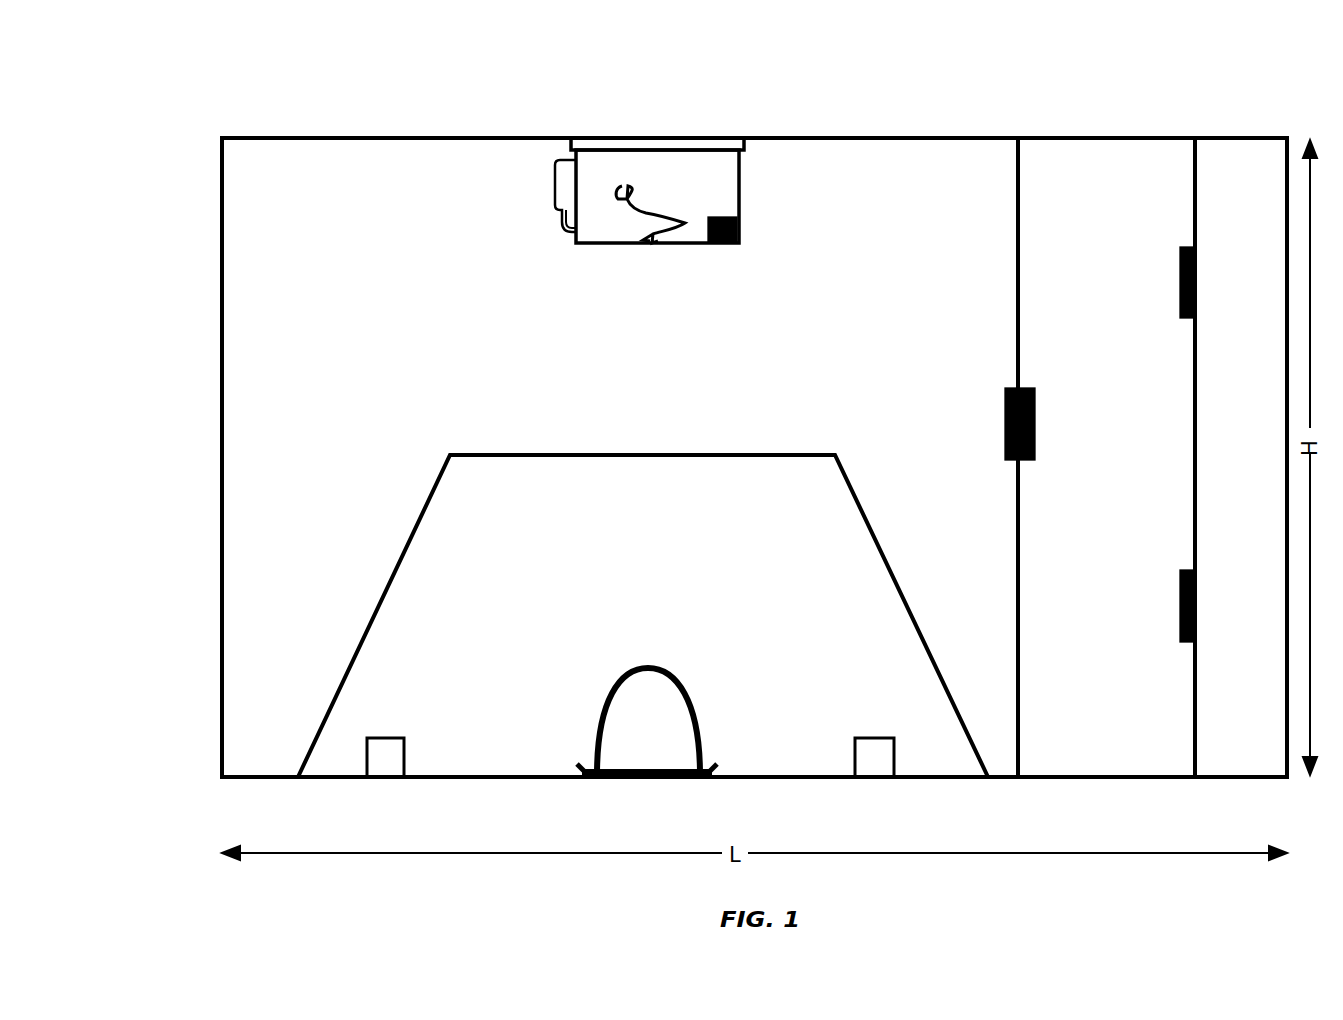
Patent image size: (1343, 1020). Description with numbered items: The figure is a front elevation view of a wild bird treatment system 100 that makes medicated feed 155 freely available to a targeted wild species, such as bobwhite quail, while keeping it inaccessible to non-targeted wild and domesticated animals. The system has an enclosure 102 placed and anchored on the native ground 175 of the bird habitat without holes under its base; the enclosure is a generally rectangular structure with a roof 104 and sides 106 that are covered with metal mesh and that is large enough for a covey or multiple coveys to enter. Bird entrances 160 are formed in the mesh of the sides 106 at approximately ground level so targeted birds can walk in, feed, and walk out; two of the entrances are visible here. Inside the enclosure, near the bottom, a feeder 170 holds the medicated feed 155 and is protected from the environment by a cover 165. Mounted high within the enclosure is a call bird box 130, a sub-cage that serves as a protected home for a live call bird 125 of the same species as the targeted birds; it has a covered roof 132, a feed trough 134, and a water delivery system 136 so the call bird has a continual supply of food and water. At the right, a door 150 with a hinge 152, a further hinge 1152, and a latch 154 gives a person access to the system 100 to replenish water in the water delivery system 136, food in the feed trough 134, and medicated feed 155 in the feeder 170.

The wild bird treatment system 100 is at (360, 86).
The enclosure 102 is at (222, 232).
The roof 104 is at (492, 138).
The sides 106 is at (225, 437).
The live call bird 125 is at (614, 220).
The call bird box 130 is at (658, 243).
The covered roof 132 is at (725, 138).
The feed trough 134 is at (739, 238).
The water delivery system 136 is at (555, 186).
The door 150 is at (1106, 457).
The hinges 152 is at (1180, 280).
The latch 154 is at (1005, 438).
The medicated feed 155 is at (705, 770).
The bird entrances 160 is at (872, 777).
The cover 165 is at (625, 455).
The feeder 170 is at (603, 708).
The native ground 175 is at (222, 777).
The hinge 1152 is at (1180, 592).